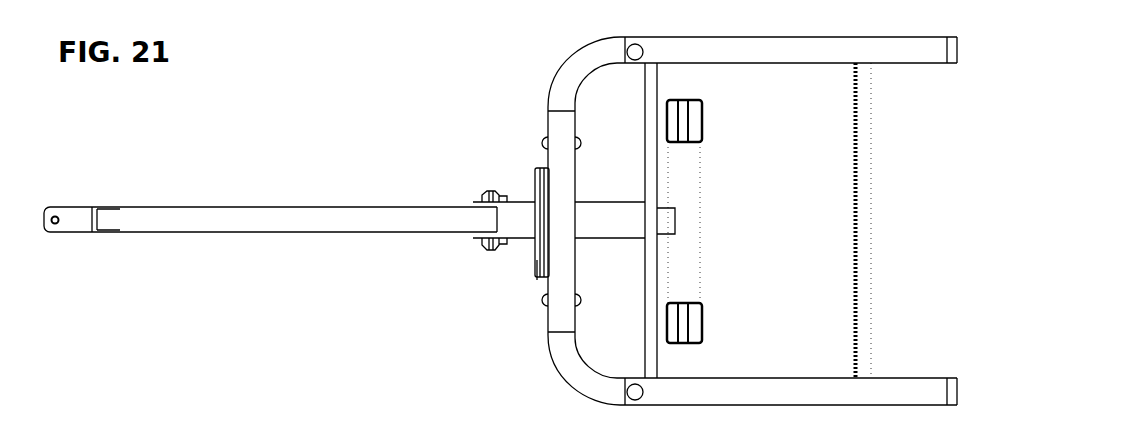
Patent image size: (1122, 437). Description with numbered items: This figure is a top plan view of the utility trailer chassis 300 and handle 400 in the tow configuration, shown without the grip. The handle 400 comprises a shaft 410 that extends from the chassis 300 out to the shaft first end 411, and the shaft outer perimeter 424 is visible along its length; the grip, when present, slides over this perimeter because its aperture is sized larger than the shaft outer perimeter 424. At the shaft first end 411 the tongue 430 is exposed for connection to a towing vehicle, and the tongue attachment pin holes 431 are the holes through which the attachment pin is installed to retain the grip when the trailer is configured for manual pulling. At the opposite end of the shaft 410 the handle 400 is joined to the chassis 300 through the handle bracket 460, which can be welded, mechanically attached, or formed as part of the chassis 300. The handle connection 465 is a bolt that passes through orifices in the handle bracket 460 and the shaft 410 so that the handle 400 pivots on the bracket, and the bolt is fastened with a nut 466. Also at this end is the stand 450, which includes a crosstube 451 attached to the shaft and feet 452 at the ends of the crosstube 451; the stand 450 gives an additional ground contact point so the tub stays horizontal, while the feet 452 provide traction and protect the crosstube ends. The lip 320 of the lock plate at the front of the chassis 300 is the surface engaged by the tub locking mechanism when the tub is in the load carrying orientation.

The chassis 300 is at (598, 52).
The lip 320 is at (550, 268).
The handle 400 is at (183, 126).
The shaft 410 is at (305, 208).
The shaft first end 411 is at (94, 243).
The shaft outer perimeter 424 is at (98, 208).
The tongue 430 is at (76, 229).
The tongue attachment pin holes 431 is at (55, 208).
The stand 450 is at (714, 287).
The crosstube 451 is at (700, 178).
The feet 452 is at (703, 113).
The handle bracket 460 is at (513, 228).
The handle connection 465 is at (486, 252).
The nut 466 is at (491, 191).